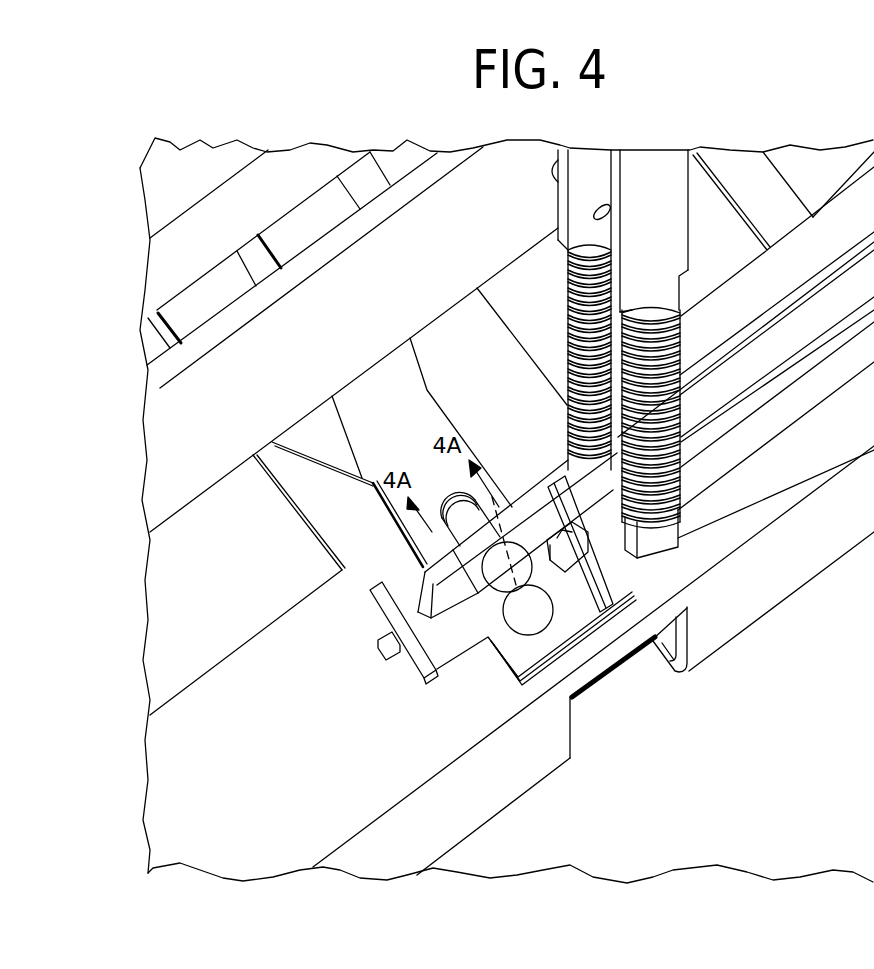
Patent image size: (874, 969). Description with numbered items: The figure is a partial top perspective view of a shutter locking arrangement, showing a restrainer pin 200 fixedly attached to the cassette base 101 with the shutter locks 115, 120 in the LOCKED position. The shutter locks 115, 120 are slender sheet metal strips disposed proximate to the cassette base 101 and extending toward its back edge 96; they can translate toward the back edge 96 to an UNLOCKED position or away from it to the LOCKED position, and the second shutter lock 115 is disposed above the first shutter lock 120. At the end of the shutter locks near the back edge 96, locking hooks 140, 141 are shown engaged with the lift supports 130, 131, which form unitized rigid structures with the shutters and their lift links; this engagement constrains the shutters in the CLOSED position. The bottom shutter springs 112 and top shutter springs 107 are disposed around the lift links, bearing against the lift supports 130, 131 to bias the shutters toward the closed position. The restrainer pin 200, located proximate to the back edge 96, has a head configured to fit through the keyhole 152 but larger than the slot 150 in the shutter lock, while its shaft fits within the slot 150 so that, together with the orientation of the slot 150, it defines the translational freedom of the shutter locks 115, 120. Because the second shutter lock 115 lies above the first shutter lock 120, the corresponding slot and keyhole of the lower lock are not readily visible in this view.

The back edge 96 is at (610, 727).
The cassette base 101 is at (240, 672).
The top shutter springs 107 is at (680, 293).
The bottom shutter springs 112 is at (568, 275).
The second shutter lock 115 is at (418, 363).
The first shutter lock 120 is at (307, 460).
The lift support 130 is at (835, 270).
The lift support 131 is at (823, 405).
The locking hook 140 is at (373, 610).
The locking hook 141 is at (545, 522).
The slot 150 is at (437, 542).
The keyhole 152 is at (513, 630).
The restrainer pin 200 is at (500, 587).